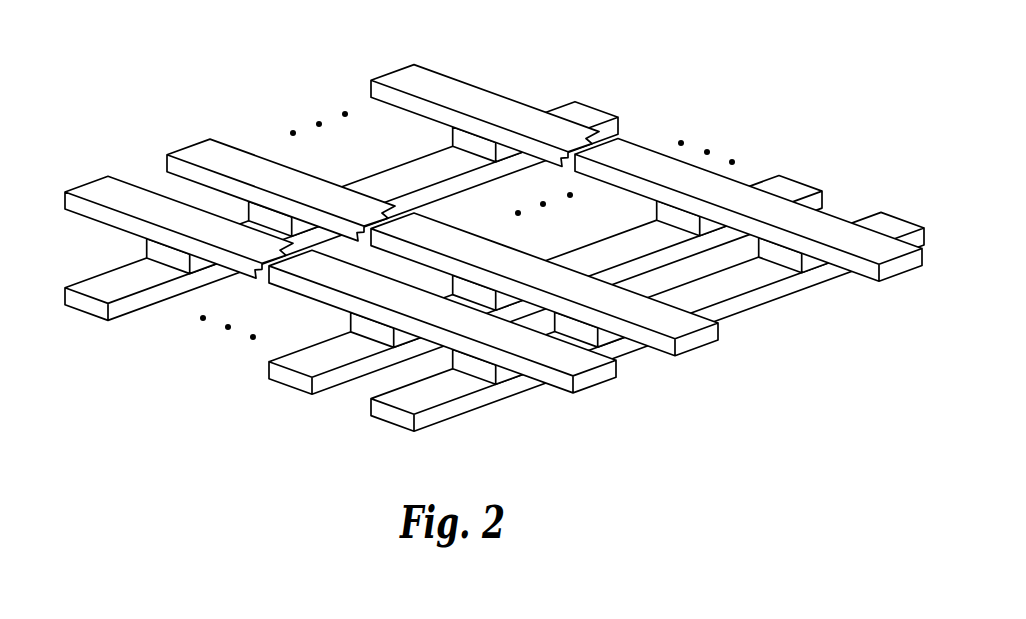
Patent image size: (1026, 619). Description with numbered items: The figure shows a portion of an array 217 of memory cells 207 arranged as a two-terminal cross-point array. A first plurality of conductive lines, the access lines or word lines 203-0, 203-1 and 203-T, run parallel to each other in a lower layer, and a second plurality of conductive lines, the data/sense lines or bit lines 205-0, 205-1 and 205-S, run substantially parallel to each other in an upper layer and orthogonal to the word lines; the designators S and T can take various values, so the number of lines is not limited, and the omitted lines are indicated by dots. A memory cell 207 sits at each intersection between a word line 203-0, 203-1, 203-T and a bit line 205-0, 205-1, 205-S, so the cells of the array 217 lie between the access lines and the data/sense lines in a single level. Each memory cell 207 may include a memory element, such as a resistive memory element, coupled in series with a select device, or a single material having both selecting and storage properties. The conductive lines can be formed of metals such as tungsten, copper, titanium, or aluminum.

The array 217 is at (469, 222).
The access line 203-0 is at (887, 225).
The access line 203-1 is at (785, 188).
The access line 203-T is at (582, 115).
The data/sense line 205-0 is at (102, 188).
The data/sense line 205-1 is at (203, 152).
The data/sense line 205-S is at (407, 77).
The memory cell 207 is at (160, 250).